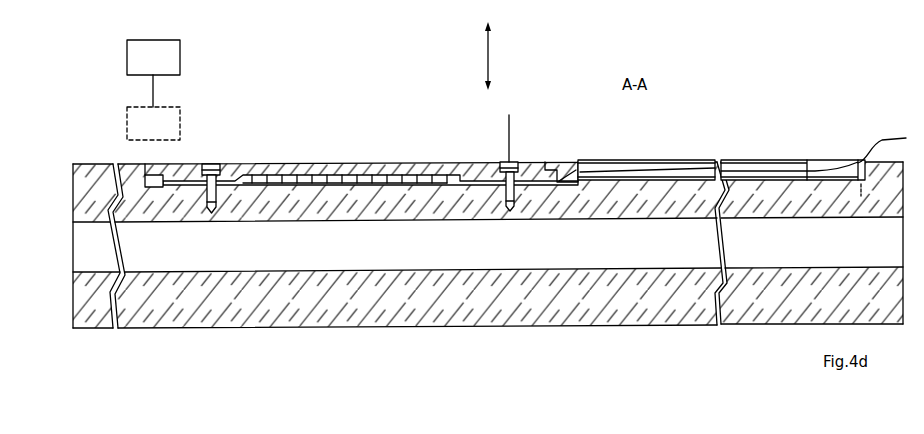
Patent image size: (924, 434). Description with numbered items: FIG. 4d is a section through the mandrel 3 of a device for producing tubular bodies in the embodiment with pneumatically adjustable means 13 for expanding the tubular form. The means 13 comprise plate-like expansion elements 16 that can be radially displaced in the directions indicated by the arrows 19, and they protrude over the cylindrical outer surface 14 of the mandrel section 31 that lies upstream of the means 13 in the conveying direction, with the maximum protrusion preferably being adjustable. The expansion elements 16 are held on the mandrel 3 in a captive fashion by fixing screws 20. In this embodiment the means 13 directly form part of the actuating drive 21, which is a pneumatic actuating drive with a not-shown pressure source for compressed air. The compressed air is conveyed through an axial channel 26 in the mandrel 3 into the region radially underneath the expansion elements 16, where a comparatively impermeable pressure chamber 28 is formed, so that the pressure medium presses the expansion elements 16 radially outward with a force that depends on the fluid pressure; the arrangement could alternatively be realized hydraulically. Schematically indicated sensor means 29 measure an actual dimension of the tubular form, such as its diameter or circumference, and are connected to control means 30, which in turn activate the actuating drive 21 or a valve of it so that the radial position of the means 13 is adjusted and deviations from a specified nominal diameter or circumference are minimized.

The mandrel 3 is at (420, 297).
The means 13 is at (338, 165).
The cylindrical outer surface 14 is at (681, 328).
The expansion elements 16 is at (398, 167).
The arrows 19 is at (499, 56).
The fixing screws 20 is at (213, 163).
The actuating drive 21 is at (423, 172).
The axial channel 26 is at (683, 162).
The pressure chamber 28 is at (260, 172).
The sensor means 29 is at (184, 118).
The control means 30 is at (184, 52).
The mandrel section 31 is at (632, 315).